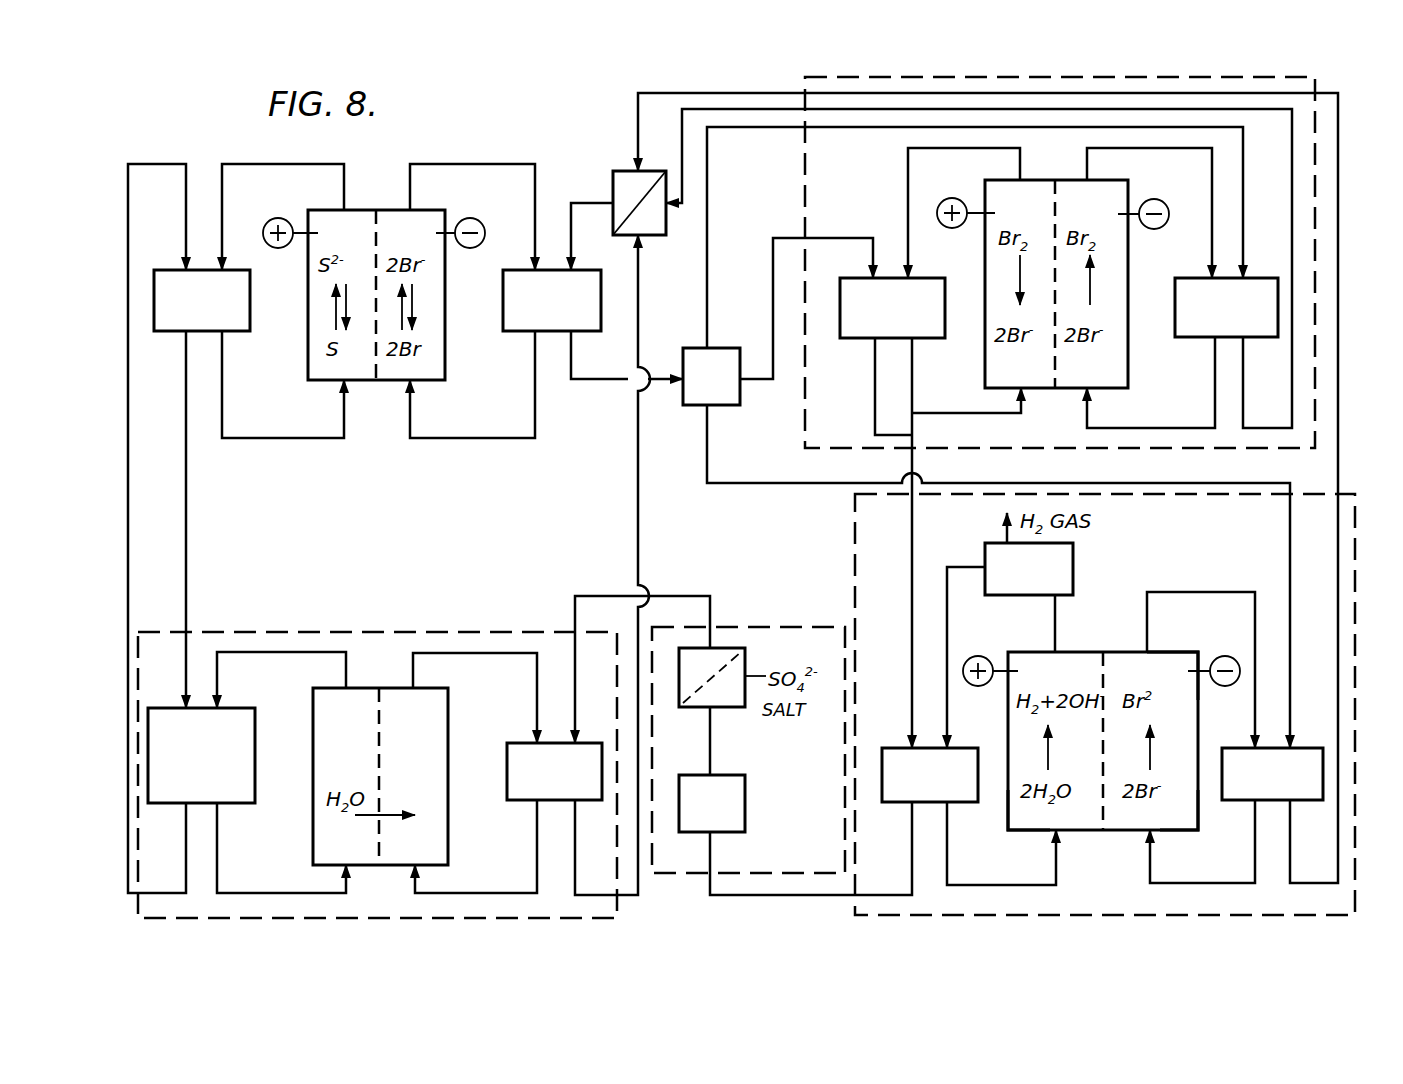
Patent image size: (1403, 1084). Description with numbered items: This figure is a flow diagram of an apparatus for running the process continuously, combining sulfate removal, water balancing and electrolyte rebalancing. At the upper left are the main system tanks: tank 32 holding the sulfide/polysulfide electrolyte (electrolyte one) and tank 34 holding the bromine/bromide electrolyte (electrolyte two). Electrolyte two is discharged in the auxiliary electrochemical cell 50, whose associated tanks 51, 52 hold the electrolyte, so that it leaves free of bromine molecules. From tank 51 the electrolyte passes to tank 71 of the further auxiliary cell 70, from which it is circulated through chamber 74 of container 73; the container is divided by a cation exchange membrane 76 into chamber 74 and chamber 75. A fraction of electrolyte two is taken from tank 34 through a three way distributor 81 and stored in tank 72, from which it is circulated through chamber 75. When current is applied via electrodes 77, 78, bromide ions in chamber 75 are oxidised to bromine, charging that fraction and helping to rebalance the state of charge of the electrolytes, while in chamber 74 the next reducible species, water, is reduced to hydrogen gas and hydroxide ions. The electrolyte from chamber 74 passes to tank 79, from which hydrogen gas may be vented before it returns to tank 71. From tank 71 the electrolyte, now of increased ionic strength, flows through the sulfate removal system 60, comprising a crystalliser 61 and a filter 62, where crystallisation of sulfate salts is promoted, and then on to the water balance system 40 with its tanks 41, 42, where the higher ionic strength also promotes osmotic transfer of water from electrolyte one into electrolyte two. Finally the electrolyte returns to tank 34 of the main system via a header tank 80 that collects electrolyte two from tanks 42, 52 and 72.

The tank 32 is at (176, 314).
The tank 34 is at (542, 314).
The water balance system 40 is at (352, 632).
The tank 41 is at (191, 768).
The tank 42 is at (545, 785).
The auxiliary electrochemical cell 50 is at (1317, 358).
The tank 51 is at (883, 321).
The tank 52 is at (1217, 321).
The sulfate removal system 60 is at (740, 627).
The crystalliser 61 is at (745, 800).
The filter 62 is at (733, 710).
The further auxiliary cell 70 is at (855, 540).
The tank 71 is at (920, 788).
The tank 72 is at (1262, 787).
The container 73 is at (1200, 651).
The chamber 74 is at (1008, 820).
The chamber 75 is at (1180, 813).
The cation exchange membrane 76 is at (1100, 668).
The electrode 77 is at (978, 656).
The electrode 78 is at (1225, 686).
The tank 79 is at (1073, 558).
The header tank 80 is at (616, 171).
The three way distributor 81 is at (692, 408).